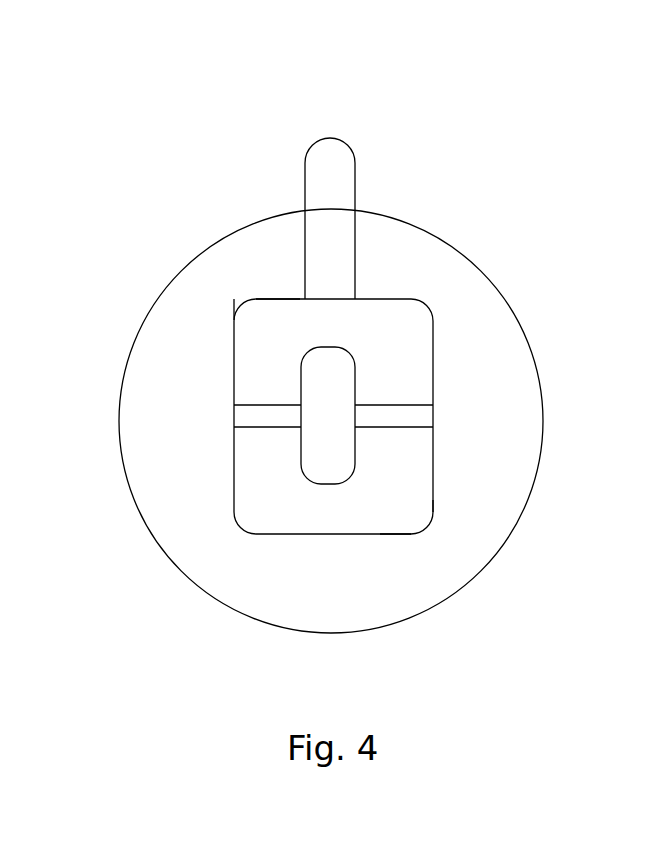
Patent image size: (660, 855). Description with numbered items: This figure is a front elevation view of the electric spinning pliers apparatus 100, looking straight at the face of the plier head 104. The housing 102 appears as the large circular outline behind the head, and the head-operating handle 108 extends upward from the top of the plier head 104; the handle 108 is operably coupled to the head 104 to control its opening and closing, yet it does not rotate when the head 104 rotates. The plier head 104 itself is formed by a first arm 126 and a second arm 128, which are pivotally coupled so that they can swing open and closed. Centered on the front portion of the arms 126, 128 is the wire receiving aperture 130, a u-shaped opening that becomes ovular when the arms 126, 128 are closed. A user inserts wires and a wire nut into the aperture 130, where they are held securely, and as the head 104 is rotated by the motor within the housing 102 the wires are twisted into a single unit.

The electric spinning pliers apparatus 100 is at (145, 126).
The housing 102 is at (499, 393).
The plier head 104 is at (400, 315).
The head-operating handle 108 is at (343, 180).
The first arm 126 is at (252, 325).
The second arm 128 is at (413, 502).
The wire receiving aperture 130 is at (327, 419).